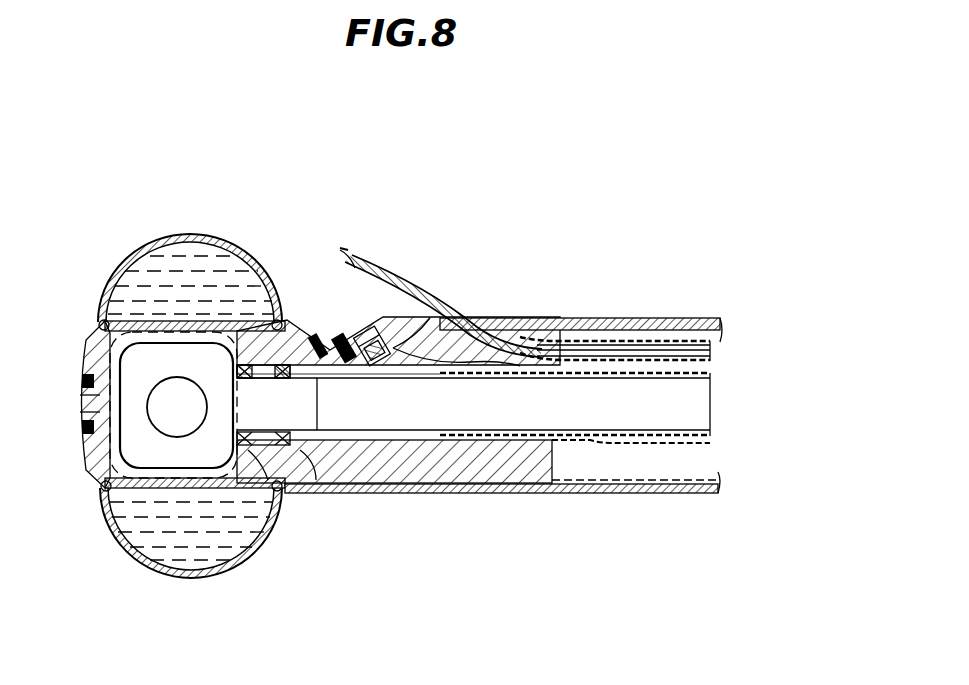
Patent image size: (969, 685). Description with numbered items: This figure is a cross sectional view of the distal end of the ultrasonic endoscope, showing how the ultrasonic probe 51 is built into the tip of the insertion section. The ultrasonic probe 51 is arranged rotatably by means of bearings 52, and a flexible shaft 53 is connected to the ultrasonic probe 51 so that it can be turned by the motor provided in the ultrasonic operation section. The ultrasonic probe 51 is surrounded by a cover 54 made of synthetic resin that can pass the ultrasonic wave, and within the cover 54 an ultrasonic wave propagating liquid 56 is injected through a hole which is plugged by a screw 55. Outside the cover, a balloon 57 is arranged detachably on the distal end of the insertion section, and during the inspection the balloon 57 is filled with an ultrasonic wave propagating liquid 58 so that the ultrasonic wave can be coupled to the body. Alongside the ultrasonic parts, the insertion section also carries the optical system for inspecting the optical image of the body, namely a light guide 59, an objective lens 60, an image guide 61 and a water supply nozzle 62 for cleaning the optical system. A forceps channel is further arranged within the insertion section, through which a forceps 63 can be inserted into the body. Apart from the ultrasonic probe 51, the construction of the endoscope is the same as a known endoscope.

The ultrasonic probe 51 is at (142, 430).
The bearings 52 is at (273, 452).
The flexible shaft 53 is at (460, 415).
The cover 54 is at (150, 490).
The screw 55 is at (85, 392).
The ultrasonic wave propagating liquid 56 is at (110, 344).
The balloon 57 is at (205, 236).
The ultrasonic wave propagating liquid 58 is at (158, 270).
The light guide 59 is at (345, 336).
The objective lens 60 is at (372, 330).
The image guide 61 is at (408, 338).
The water supply nozzle 62 is at (314, 338).
The forceps 63 is at (400, 293).